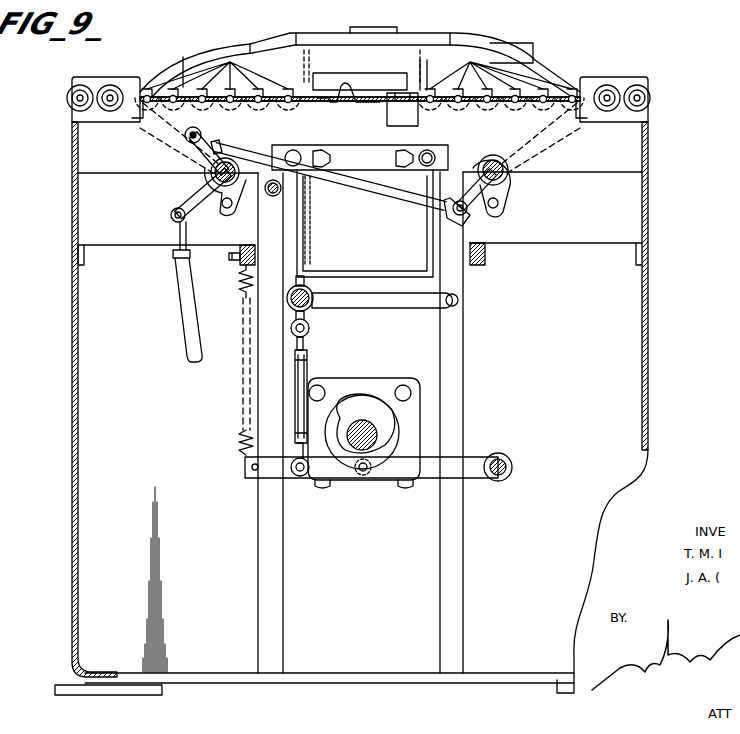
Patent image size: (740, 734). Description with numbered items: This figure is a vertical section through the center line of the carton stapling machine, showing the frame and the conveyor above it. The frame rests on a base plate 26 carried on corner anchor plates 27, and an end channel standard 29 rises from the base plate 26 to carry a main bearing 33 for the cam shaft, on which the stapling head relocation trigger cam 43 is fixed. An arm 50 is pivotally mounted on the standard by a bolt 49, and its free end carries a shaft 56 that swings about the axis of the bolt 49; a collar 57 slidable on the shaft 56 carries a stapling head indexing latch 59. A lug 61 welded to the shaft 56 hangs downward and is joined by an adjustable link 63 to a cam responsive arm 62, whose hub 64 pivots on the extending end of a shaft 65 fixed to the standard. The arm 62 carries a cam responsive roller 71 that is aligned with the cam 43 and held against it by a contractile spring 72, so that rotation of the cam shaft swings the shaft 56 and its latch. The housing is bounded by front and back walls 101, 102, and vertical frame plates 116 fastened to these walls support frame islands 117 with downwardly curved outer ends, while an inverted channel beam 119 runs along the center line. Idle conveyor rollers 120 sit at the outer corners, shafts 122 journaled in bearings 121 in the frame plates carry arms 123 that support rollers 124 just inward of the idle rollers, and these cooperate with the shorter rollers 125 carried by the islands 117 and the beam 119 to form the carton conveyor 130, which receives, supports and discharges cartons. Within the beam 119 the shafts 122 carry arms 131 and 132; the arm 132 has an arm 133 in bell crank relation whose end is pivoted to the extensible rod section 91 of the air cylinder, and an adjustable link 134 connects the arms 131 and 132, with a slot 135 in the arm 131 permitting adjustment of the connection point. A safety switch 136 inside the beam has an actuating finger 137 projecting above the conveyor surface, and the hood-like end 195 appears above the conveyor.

The base plate 26 is at (298, 684).
The corner anchor plate 27 is at (62, 686).
The end channel standard 29 is at (455, 367).
The main bearing 33 is at (388, 388).
The stapling head relocation trigger cam 43 is at (336, 416).
The bolt 49 is at (459, 300).
The arm 50 is at (420, 300).
The shaft 56 is at (310, 312).
The collar 57 is at (305, 286).
The stapling head indexing latch 59 is at (305, 205).
The lug 61 is at (245, 319).
The cam responsive arm 62 is at (428, 479).
The adjustable link 63 is at (302, 373).
The hub 64 is at (513, 467).
The shaft 65 is at (496, 456).
The cam responsive roller 71 is at (346, 490).
The contractile spring 72 is at (245, 436).
The extensible rod section 91 is at (183, 294).
The front wall 101 is at (649, 207).
The back wall 102 is at (73, 155).
The vertical frame plate 116 is at (582, 246).
The frame island 117 is at (555, 72).
The inverted channel beam 119 is at (630, 150).
The idle conveyor roller 120 is at (665, 94).
The bearing 121 is at (505, 186).
The shaft 122 is at (490, 164).
The arm 123 is at (585, 120).
The roller 124 is at (603, 85).
The shorter roller 125 is at (450, 72).
The carton conveyor 130 is at (673, 60).
The arm 131 is at (478, 212).
The arm 132 is at (205, 142).
The arm 133 is at (195, 190).
The adjustable link 134 is at (388, 192).
The slot 135 is at (472, 244).
The safety switch 136 is at (425, 118).
The actuating finger 137 is at (345, 88).
The hood end 195 is at (520, 52).